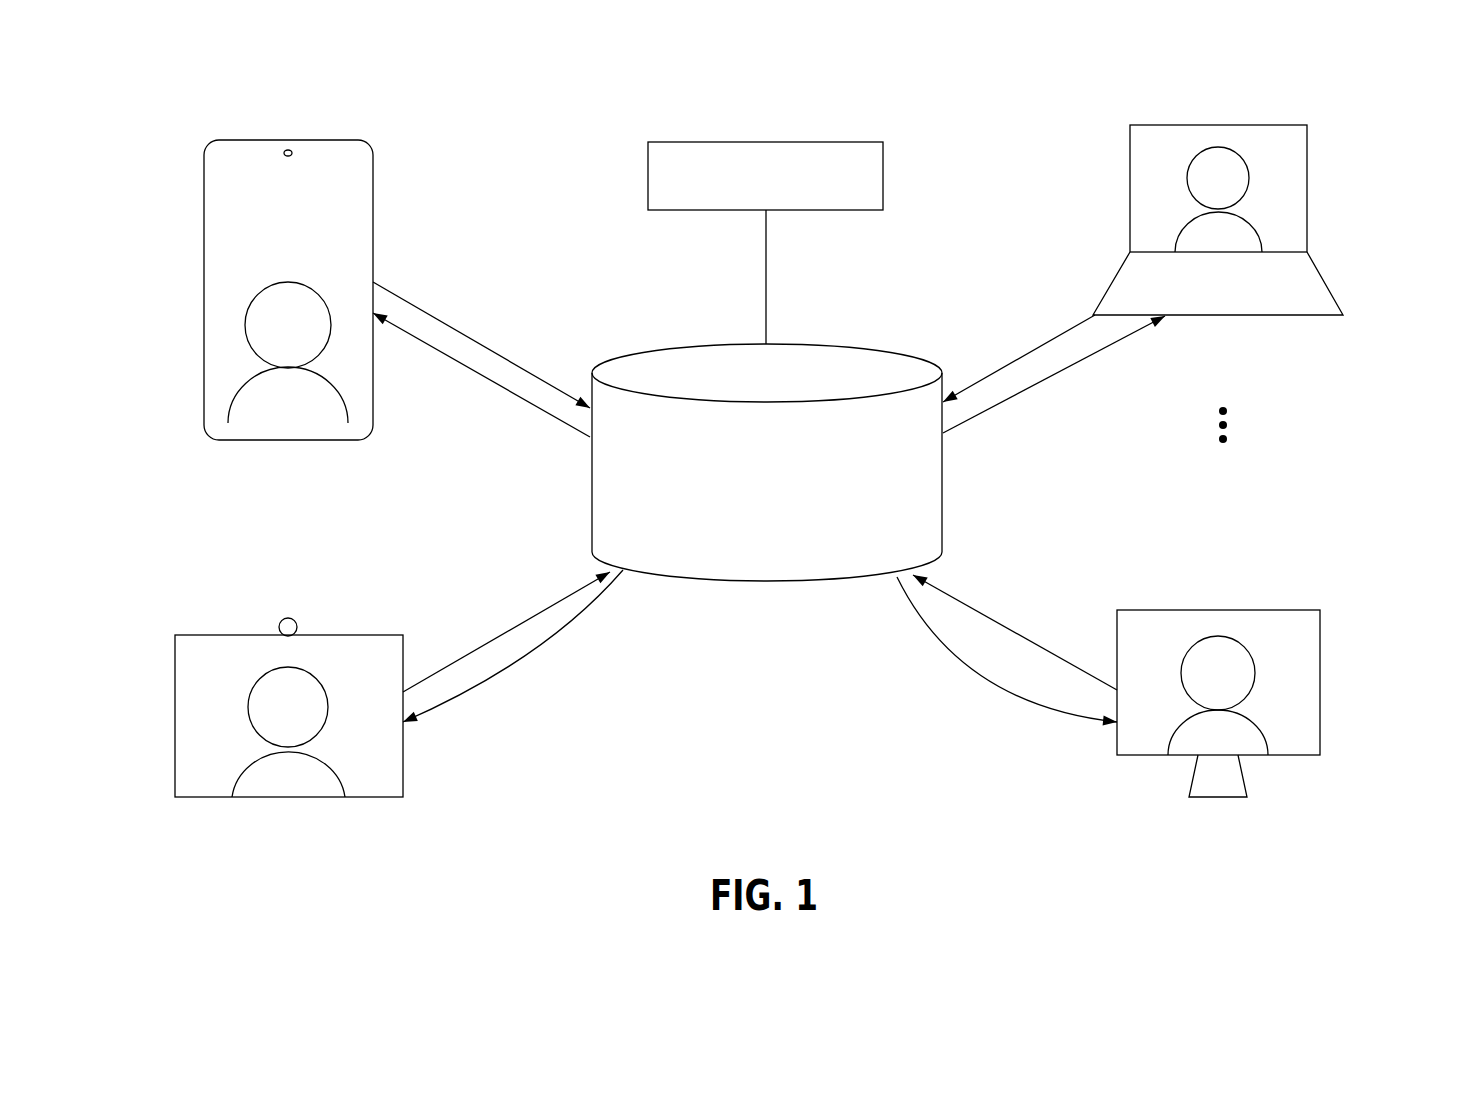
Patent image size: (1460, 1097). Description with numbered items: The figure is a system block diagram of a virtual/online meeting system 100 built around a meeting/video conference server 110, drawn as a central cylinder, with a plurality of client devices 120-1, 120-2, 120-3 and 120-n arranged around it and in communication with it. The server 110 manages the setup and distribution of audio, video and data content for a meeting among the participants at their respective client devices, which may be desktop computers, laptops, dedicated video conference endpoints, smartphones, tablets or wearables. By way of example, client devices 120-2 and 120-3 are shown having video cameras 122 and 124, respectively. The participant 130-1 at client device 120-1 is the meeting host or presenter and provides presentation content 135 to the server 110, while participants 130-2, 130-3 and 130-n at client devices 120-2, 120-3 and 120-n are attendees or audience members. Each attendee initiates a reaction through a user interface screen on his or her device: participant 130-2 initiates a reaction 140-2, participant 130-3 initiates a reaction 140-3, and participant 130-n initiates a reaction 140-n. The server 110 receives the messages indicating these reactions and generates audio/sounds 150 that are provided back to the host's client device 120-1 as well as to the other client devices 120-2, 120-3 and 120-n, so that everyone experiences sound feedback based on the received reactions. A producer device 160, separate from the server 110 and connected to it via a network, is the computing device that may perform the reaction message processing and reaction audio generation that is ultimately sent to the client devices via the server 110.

The system 100 is at (923, 70).
The meeting/video conference server 110 is at (630, 378).
The client device 120-1 is at (1320, 690).
The client device 120-2 is at (197, 757).
The client device 120-3 is at (204, 206).
The client device 120-n is at (1130, 186).
The video camera 122 is at (289, 148).
The video camera 124 is at (285, 618).
The participant 130-1 is at (1208, 637).
The participant 130-2 is at (248, 708).
The participant 130-3 is at (245, 322).
The participant 130-n is at (1218, 148).
The presentation content 135 is at (1007, 627).
The reaction 140-2 is at (440, 670).
The reaction 140-3 is at (407, 302).
The reaction 140-n is at (977, 385).
The audio/sounds 150 is at (420, 338).
The producer device 160 is at (648, 172).